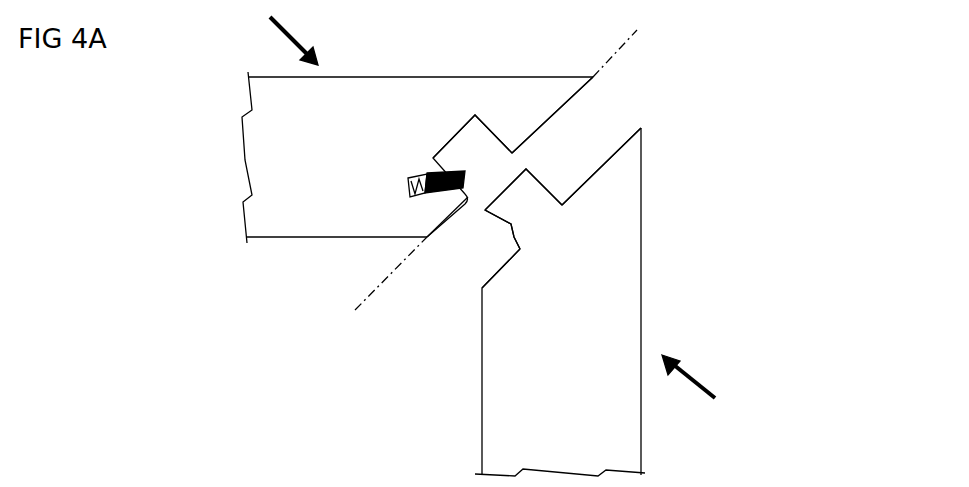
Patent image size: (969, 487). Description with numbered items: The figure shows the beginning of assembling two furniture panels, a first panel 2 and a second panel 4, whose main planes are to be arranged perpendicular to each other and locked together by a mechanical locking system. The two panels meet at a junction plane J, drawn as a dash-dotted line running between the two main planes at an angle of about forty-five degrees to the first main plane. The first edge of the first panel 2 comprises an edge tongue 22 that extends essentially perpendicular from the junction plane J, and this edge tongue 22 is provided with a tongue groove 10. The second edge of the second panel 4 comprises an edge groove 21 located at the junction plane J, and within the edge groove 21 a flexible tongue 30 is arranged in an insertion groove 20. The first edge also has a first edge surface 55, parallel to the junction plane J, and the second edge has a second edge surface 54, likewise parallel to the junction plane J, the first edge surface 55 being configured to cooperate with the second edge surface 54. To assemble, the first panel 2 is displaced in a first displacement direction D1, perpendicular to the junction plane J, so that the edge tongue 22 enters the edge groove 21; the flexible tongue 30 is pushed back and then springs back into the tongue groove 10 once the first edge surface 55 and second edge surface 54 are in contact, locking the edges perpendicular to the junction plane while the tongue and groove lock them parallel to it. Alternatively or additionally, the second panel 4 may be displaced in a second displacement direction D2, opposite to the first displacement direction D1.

The first panel 2 is at (498, 383).
The second panel 4 is at (307, 228).
The tongue groove 10 is at (507, 232).
The insertion groove 20 is at (408, 184).
The edge groove 21 is at (457, 140).
The edge tongue 22 is at (532, 212).
The flexible tongue 30 is at (427, 172).
The second edge surface 54 is at (562, 103).
The first edge surface 55 is at (610, 160).
The junction plane J is at (496, 167).
The first displacement direction D1 is at (713, 391).
The second displacement direction D2 is at (270, 35).